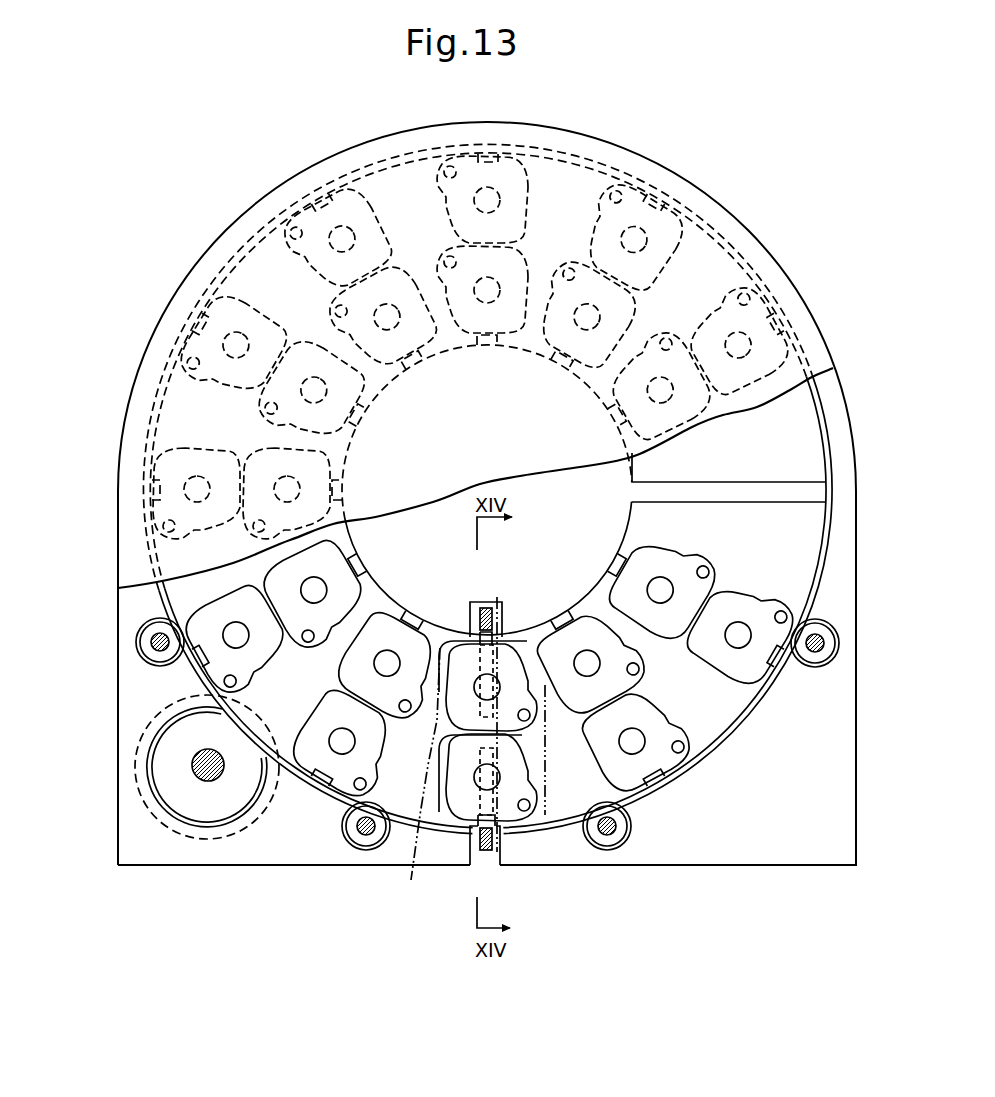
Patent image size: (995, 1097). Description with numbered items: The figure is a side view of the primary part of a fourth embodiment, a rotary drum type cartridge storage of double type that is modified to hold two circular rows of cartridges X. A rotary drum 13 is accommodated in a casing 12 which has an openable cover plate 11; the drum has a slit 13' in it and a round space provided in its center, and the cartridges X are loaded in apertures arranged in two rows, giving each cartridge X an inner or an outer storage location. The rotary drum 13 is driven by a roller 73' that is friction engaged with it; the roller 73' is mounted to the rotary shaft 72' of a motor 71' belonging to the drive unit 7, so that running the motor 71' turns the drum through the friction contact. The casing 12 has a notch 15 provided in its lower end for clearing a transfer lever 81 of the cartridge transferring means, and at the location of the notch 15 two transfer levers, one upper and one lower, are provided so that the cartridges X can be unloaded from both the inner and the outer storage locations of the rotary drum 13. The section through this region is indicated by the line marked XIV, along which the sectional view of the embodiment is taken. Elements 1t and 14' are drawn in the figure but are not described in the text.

The cover plate 11 is at (193, 287).
The casing 12 is at (137, 372).
The rotary drum 13 is at (718, 262).
The slit 13′ is at (745, 485).
The transfer lever 81 is at (477, 838).
The drive unit 7 is at (152, 706).
The rotary shaft 72′ is at (192, 762).
The roller 73′ is at (204, 812).
The motor 71′ is at (240, 833).
The mounting bolt 1t is at (360, 850).
The tool holder section 14′ is at (418, 845).
The notch 15 is at (490, 860).
The cartridge X is at (632, 650).